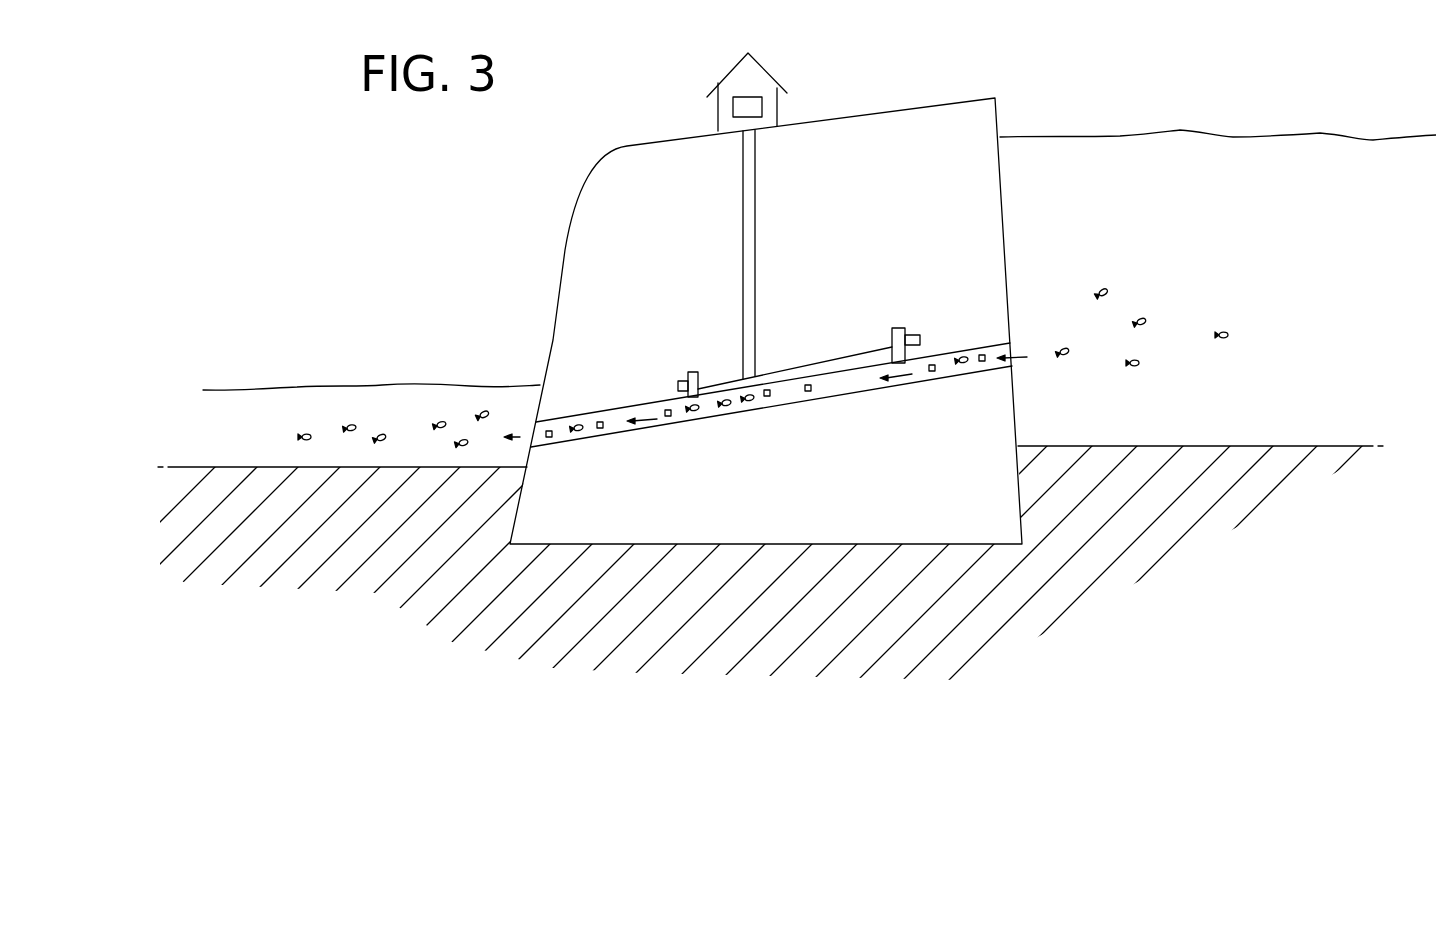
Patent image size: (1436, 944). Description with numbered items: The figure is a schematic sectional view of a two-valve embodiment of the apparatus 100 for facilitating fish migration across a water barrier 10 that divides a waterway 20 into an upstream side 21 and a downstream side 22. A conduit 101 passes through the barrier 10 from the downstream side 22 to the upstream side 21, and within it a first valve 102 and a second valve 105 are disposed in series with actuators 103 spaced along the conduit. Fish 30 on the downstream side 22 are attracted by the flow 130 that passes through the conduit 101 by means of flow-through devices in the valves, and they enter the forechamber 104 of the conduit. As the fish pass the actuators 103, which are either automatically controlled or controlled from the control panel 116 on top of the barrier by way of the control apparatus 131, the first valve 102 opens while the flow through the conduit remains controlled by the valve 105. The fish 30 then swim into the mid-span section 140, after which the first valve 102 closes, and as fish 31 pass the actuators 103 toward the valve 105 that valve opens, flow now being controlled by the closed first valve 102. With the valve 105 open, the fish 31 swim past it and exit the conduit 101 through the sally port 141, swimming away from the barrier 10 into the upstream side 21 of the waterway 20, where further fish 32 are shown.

The water barrier 10 is at (862, 115).
The waterway 20 is at (1292, 90).
The upstream side 21 is at (1352, 137).
The downstream side 22 is at (382, 385).
The fish 30 is at (308, 433).
The fish 31 is at (750, 402).
The upstream fish 32 is at (1140, 364).
The apparatus 100 is at (957, 68).
The conduit 101 is at (771, 416).
The first valve 102 is at (689, 396).
The actuators 103 is at (668, 410).
The forechamber 104 is at (568, 420).
The valve 105 is at (890, 368).
The control panel 116 is at (753, 97).
The flow 130 is at (1023, 352).
The control apparatus 131 is at (742, 237).
The mid-span section 140 is at (830, 398).
The sally port 141 is at (975, 372).